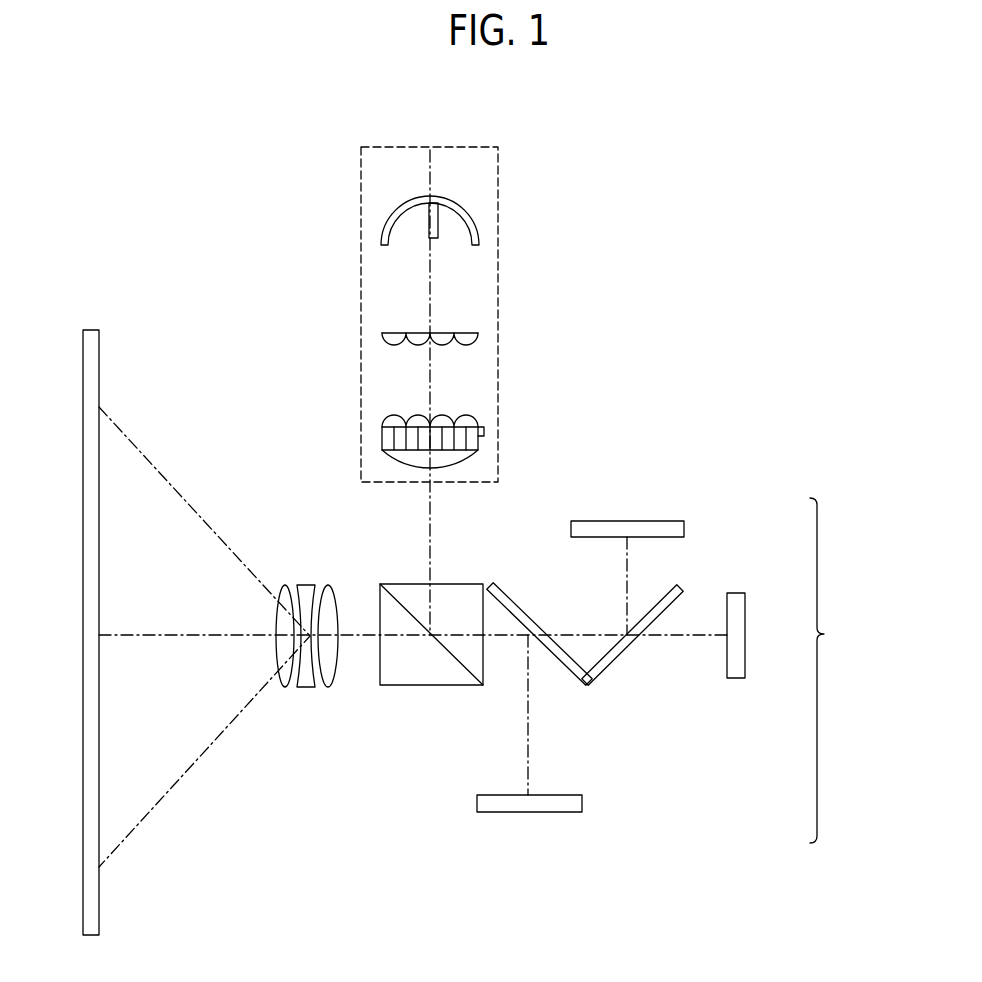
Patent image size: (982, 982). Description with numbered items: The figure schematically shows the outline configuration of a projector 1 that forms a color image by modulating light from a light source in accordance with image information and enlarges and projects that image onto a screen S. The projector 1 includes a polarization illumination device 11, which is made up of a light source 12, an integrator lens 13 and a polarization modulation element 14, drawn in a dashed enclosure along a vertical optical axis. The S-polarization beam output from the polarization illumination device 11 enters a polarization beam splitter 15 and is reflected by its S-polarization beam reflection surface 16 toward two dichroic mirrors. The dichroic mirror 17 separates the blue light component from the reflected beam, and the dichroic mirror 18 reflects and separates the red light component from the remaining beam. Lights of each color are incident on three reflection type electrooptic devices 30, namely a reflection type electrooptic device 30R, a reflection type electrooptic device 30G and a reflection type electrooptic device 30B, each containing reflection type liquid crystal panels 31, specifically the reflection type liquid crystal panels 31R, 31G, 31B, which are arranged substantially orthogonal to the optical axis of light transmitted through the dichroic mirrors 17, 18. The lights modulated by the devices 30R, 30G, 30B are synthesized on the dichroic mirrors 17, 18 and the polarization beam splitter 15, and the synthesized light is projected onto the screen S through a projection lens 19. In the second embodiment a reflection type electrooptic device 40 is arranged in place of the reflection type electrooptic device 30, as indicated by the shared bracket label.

The projector 1 is at (734, 235).
The polarization illumination device 11 is at (498, 178).
The light source 12 is at (470, 214).
The integrator lens 13 is at (472, 333).
The polarization modulation element 14 is at (484, 440).
The polarization beam splitter 15 is at (393, 691).
The S-polarization beam reflection surface 16 is at (458, 683).
The dichroic mirror 17 is at (560, 663).
The dichroic mirror 18 is at (608, 662).
The projection lens 19 is at (338, 583).
The reflection type electrooptic device 30R is at (690, 524).
The reflection type electrooptic device 30G is at (750, 636).
The reflection type electrooptic device 30B is at (596, 800).
The reflection type liquid crystal panel 31R is at (585, 532).
The reflection type liquid crystal panel 31G is at (733, 672).
The reflection type liquid crystal panel 31B is at (598, 902).
The reflection type liquid crystal panels 31 is at (606, 724).
The reflection type electrooptic devices 30 is at (849, 670).
The reflection type electrooptic device 40 is at (858, 634).
The screen S is at (88, 897).